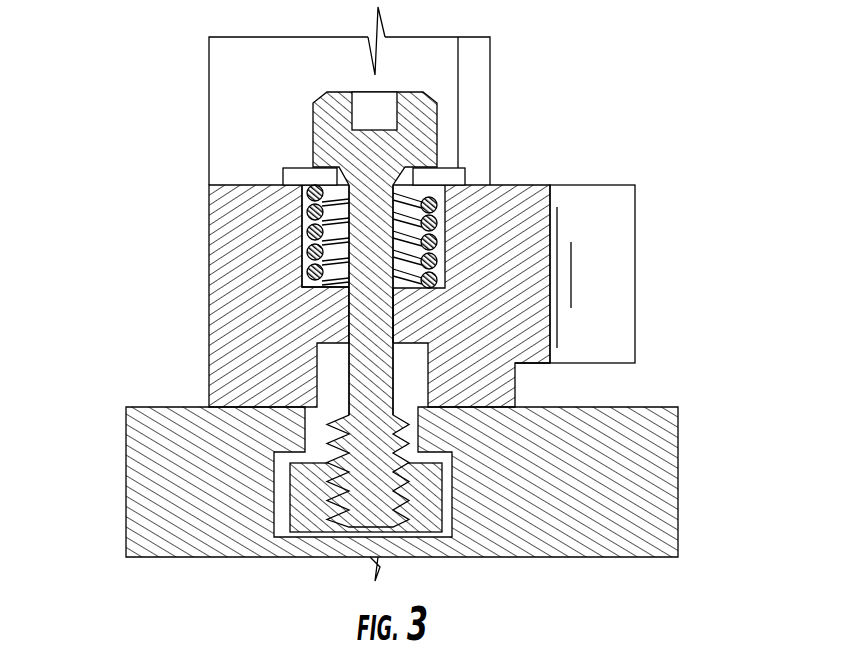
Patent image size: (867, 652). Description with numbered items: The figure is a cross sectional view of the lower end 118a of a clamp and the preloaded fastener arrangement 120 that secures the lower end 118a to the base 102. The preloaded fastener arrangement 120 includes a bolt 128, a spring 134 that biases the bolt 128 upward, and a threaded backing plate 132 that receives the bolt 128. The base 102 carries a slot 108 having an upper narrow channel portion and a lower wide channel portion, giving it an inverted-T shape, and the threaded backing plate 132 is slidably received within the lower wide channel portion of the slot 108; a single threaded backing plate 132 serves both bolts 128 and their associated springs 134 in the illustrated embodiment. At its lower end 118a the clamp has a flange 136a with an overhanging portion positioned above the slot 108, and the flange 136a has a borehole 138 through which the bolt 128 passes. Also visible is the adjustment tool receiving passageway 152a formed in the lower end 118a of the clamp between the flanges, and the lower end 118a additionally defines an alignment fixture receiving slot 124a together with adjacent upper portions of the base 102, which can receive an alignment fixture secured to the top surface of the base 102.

The base 102 is at (660, 468).
The slot 108 is at (330, 432).
The lower end of the clamp 118a is at (661, 232).
The preloaded fastener arrangement 120 is at (283, 292).
The alignment fixture receiving slot 124a is at (613, 385).
The bolt 128 is at (373, 313).
The threaded backing plate 132 is at (427, 502).
The spring 134 is at (433, 198).
The flange 136a is at (223, 222).
The borehole 138 is at (349, 324).
The adjustment tool receiving passageway 152a is at (622, 210).